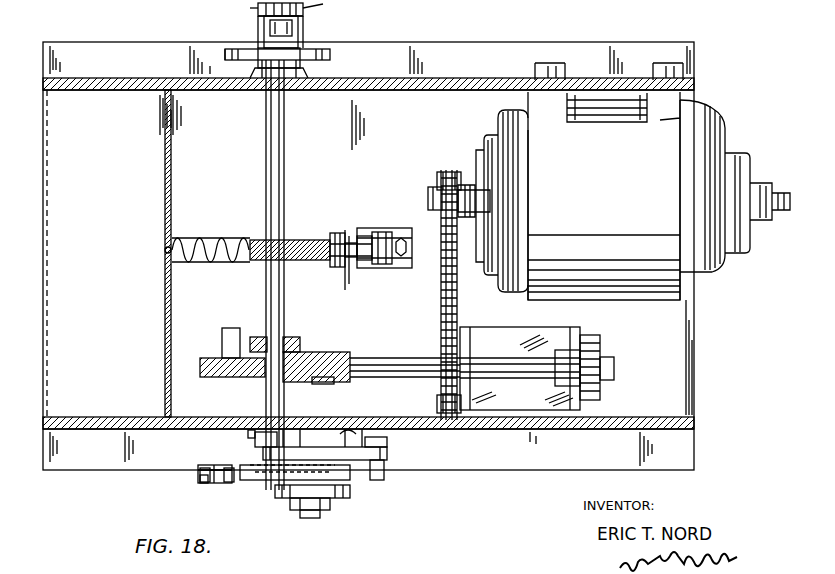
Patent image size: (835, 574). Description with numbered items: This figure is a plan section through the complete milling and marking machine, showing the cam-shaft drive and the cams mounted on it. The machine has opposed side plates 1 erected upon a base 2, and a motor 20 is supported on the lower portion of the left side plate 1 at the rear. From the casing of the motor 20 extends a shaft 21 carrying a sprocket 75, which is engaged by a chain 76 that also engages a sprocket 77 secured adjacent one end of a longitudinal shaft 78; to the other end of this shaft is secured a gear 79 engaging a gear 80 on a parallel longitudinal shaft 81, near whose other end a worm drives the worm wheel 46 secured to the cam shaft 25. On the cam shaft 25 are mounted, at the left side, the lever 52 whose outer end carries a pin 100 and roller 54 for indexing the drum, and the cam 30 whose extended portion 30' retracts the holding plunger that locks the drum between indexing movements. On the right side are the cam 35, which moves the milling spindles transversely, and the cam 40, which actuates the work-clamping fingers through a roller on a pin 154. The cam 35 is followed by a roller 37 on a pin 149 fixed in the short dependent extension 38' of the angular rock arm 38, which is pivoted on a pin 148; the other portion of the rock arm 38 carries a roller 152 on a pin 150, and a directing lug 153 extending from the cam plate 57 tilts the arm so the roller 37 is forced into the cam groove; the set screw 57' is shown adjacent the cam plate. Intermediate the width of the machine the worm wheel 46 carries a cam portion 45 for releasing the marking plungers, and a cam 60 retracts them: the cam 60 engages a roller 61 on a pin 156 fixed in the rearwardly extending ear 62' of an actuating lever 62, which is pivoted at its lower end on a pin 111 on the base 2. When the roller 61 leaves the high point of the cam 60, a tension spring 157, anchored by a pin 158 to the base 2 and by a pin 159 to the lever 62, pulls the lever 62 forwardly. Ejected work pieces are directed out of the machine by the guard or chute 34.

The side plate 1 is at (408, 78).
The base 2 is at (537, 470).
The motor 20 is at (735, 135).
The shaft 21 is at (788, 200).
The cam shaft 25 is at (285, 140).
The cam 30 is at (302, 43).
The extended portion of cam 30' is at (201, 51).
The guard or chute 34 is at (171, 150).
The cam 35 is at (203, 483).
The roller 37 is at (228, 483).
The angular rock arm 38 is at (325, 444).
The short dependent extension of rock arm 38' is at (251, 445).
The cam 40 is at (330, 498).
The cam portion 45 is at (334, 382).
The worm wheel 46 is at (345, 352).
The lever 52 is at (258, 20).
The roller 54 is at (298, 26).
The cam plate 57 is at (214, 266).
The set screw 57' is at (186, 479).
The cam 60 is at (230, 262).
The roller 61 is at (350, 257).
The actuating lever 62 is at (382, 231).
The rearwardly extending ear 62' is at (358, 229).
The sprocket 75 is at (437, 178).
The chain 76 is at (441, 278).
The sprocket 77 is at (437, 404).
The longitudinal shaft 78 is at (524, 369).
The gear 79 is at (600, 345).
The gear 80 is at (612, 380).
The longitudinal shaft 81 is at (392, 367).
The pin 100 is at (303, 10).
The pin 111 is at (428, 198).
The pin 148 is at (370, 2).
The pin 149 is at (248, 434).
The pin 150 is at (387, 442).
The roller 152 is at (384, 478).
The directing lug 153 is at (198, 470).
The pin 154 is at (258, 10).
The pin 156 is at (336, 233).
The tension spring 157 is at (205, 236).
The pin 158 is at (164, 250).
The pin 159 is at (365, 268).